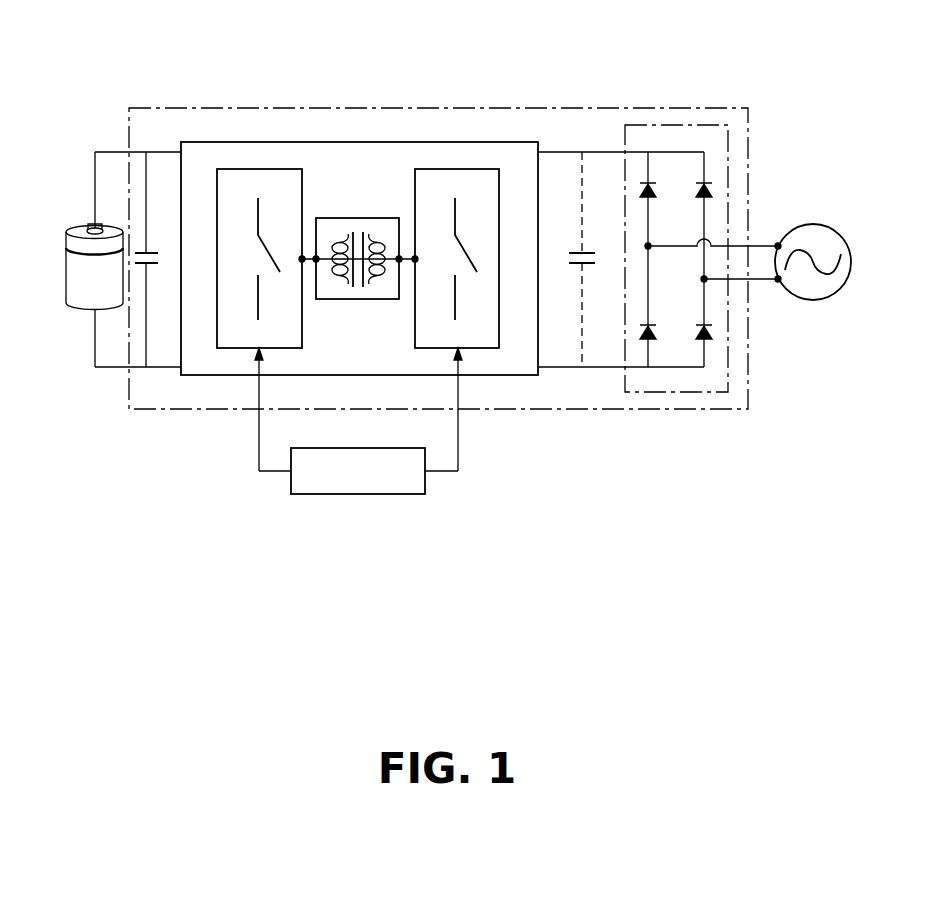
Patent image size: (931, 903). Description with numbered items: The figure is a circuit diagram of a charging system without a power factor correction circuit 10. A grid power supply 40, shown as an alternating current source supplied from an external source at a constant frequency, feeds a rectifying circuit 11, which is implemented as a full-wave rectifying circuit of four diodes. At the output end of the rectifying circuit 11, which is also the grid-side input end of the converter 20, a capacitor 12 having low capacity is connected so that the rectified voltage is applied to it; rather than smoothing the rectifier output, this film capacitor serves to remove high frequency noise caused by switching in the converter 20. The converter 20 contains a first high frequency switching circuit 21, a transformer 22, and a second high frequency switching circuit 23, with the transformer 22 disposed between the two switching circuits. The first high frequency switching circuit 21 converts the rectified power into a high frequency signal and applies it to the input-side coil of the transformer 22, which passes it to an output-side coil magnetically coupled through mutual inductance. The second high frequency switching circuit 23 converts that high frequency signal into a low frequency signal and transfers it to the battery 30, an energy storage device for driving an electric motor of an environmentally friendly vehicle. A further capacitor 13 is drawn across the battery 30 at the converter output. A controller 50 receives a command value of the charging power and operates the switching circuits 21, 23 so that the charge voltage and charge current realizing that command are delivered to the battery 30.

The charging system without a power factor correction circuit 10 is at (668, 108).
The rectifying circuit 11 is at (715, 125).
The capacitor 12 is at (592, 250).
The output capacitor 13 is at (148, 250).
The converter 20 is at (502, 142).
The first high frequency switching circuit 21 is at (443, 169).
The transformer 22 is at (353, 218).
The second high frequency switching circuit 23 is at (248, 169).
The battery 30 is at (77, 229).
The grid power supply 40 is at (814, 224).
The controller 50 is at (358, 494).